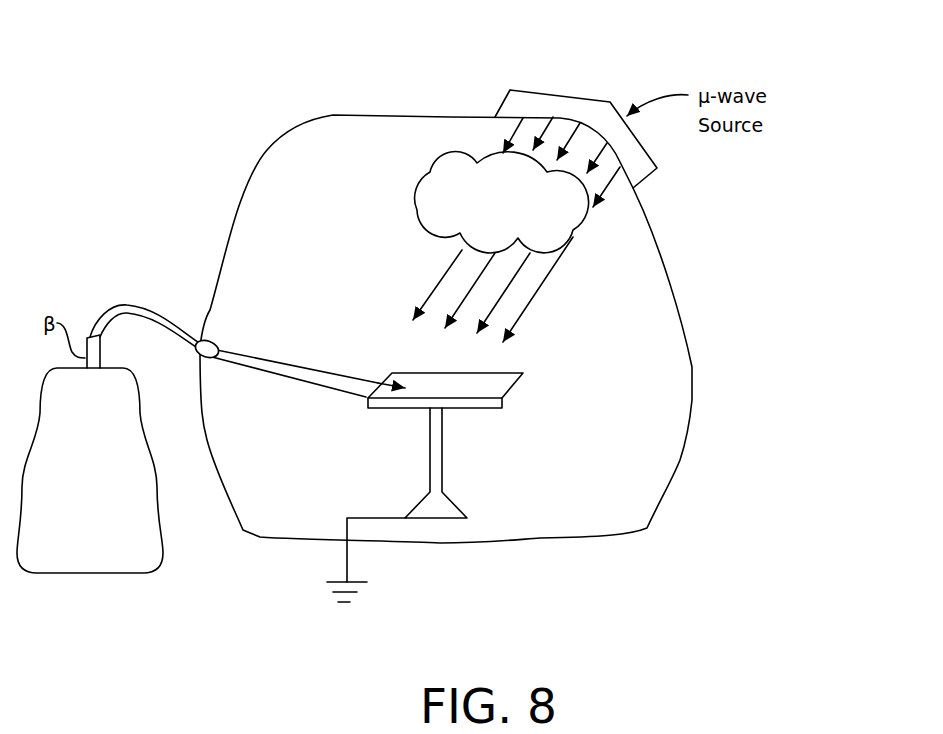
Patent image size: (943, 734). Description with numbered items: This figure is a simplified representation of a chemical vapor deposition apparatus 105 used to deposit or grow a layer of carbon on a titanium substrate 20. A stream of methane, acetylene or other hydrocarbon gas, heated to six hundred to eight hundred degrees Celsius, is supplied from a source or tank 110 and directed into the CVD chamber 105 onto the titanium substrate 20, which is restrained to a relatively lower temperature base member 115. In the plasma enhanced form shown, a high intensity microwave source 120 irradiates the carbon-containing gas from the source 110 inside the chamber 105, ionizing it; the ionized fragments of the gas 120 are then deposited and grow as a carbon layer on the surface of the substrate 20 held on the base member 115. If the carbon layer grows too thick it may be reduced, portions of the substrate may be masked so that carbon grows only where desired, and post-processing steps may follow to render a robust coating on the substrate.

The chemical vapor deposition apparatus 105 is at (684, 463).
The source or tank 110 is at (78, 573).
The base member 115 is at (450, 500).
The microwave source 120 is at (445, 148).
The titanium substrate 20 is at (533, 382).